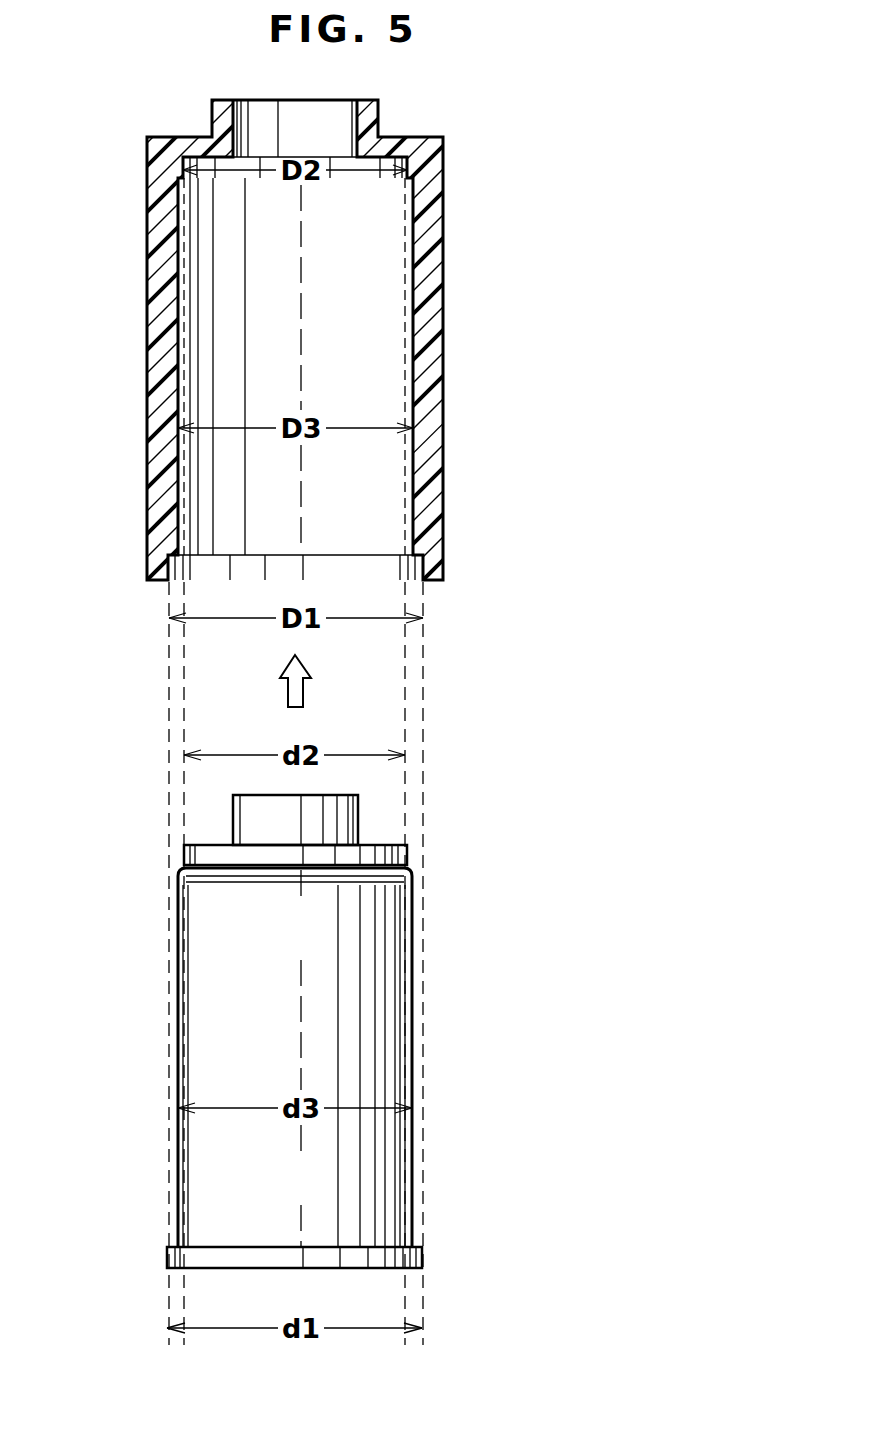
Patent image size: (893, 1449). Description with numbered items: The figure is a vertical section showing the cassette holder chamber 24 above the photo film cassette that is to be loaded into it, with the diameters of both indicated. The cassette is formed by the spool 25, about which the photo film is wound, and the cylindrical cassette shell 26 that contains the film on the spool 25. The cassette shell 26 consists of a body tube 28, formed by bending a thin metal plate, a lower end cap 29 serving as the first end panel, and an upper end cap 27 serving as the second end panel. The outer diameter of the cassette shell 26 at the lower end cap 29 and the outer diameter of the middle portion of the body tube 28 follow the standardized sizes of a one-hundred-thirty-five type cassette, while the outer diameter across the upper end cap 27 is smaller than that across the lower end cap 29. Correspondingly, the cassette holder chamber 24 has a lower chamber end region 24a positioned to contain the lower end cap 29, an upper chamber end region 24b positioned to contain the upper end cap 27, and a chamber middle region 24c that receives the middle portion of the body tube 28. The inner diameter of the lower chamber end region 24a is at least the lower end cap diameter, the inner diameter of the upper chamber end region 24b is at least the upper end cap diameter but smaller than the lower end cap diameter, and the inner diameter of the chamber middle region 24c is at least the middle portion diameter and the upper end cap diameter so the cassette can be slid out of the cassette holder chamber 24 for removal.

The cassette holder chamber 24 is at (202, 297).
The lower chamber end region 24a is at (457, 553).
The upper chamber end region 24b is at (457, 152).
The chamber middle region 24c is at (457, 190).
The spool 25 is at (358, 819).
The cassette shell 26 is at (413, 1002).
The upper end cap 27 is at (293, 855).
The body tube 28 is at (205, 1040).
The lower end cap 29 is at (288, 1258).